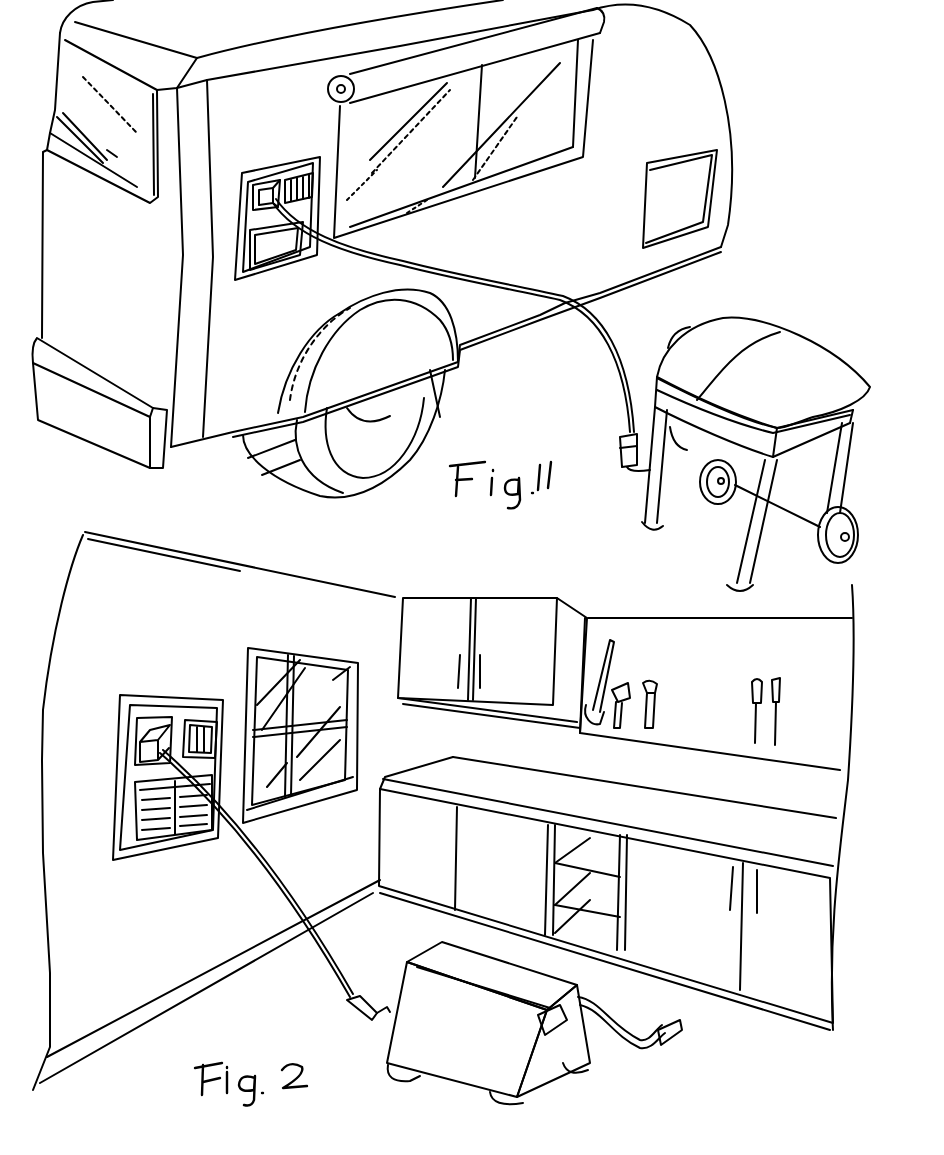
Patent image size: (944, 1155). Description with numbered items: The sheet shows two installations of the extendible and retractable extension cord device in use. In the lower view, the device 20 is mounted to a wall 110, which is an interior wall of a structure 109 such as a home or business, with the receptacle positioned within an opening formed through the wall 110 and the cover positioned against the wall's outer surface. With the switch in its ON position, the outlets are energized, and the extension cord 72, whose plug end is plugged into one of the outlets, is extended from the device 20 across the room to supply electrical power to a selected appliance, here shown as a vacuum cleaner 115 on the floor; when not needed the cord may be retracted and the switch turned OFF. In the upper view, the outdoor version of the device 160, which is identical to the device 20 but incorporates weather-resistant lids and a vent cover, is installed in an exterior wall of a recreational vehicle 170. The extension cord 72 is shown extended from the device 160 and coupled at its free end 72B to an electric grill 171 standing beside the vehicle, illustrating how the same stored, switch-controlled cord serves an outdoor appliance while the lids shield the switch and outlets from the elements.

In FIG. 11, the recreational vehicle 170 is at (718, 63).
In FIG. 11, the extendible and retractable extension cord device 160 is at (284, 157).
In FIG. 11, the extension cord 72 is at (498, 282).
In FIG. 11, the power cord connector 72B is at (618, 443).
In FIG. 11, the electric grill 171 is at (752, 333).
In FIG. 2, the wall 110 is at (243, 597).
In FIG. 2, the structure 109 is at (393, 592).
In FIG. 2, the extendible and retractable extension cord device 20 is at (208, 677).
In FIG. 2, the vacuum cleaner 115 is at (583, 1057).